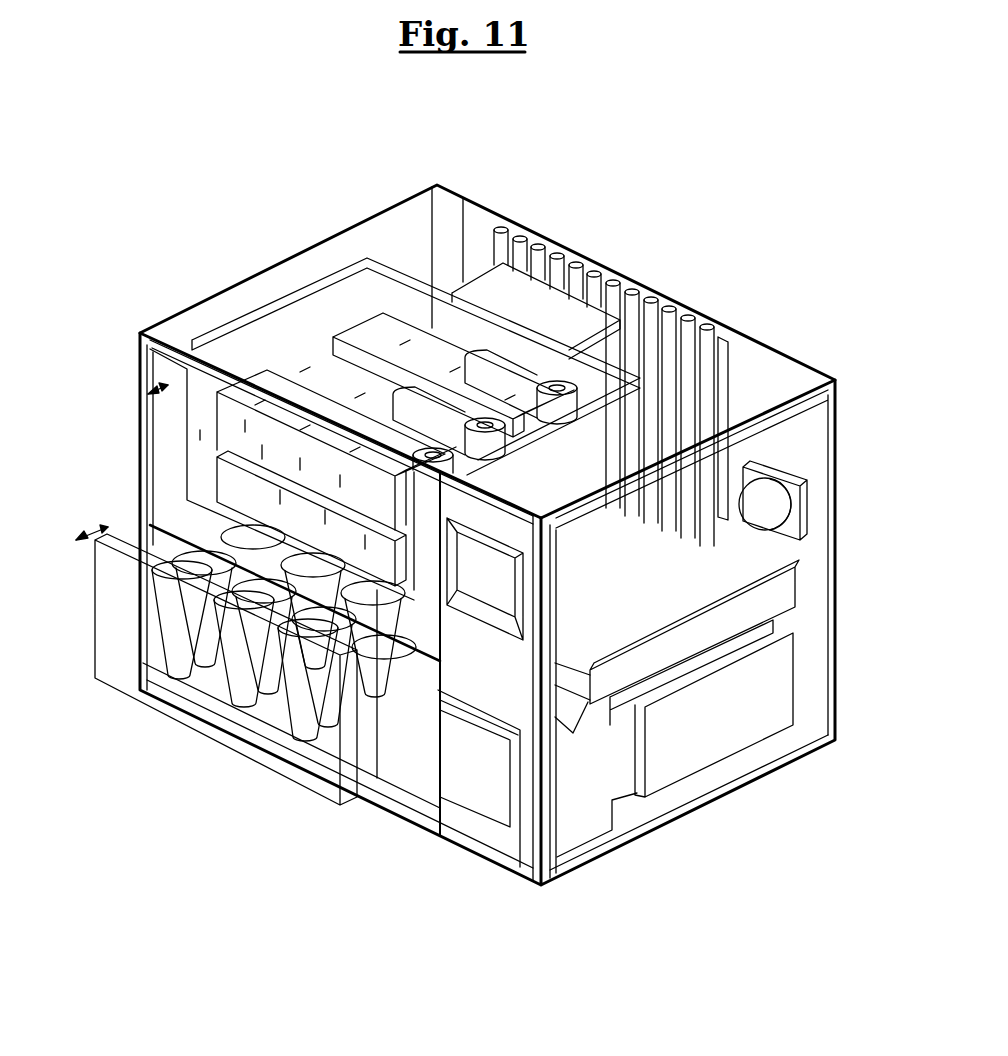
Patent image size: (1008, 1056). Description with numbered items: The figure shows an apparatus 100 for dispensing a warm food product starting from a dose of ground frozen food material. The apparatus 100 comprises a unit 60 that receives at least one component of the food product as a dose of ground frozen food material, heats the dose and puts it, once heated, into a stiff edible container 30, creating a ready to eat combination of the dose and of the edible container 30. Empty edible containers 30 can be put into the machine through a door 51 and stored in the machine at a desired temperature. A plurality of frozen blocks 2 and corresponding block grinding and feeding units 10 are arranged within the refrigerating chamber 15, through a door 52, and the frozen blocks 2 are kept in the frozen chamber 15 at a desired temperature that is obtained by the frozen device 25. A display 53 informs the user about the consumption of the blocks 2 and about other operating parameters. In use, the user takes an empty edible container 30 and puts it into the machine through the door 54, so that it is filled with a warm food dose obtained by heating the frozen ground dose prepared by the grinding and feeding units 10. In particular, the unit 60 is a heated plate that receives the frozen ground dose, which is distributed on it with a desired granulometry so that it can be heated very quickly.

The apparatus for dispensing a warm food product 100 is at (150, 156).
The frozen blocks 2 is at (367, 337).
The refrigerating chamber 15 is at (345, 300).
The block grinding and feeding units 10 is at (540, 392).
The frozen device 25 is at (663, 332).
The door 52 is at (172, 380).
The door 51 is at (103, 678).
The stiff edible container 30 is at (297, 703).
The display 53 is at (468, 572).
The door 54 is at (483, 777).
The unit 60 is at (707, 582).